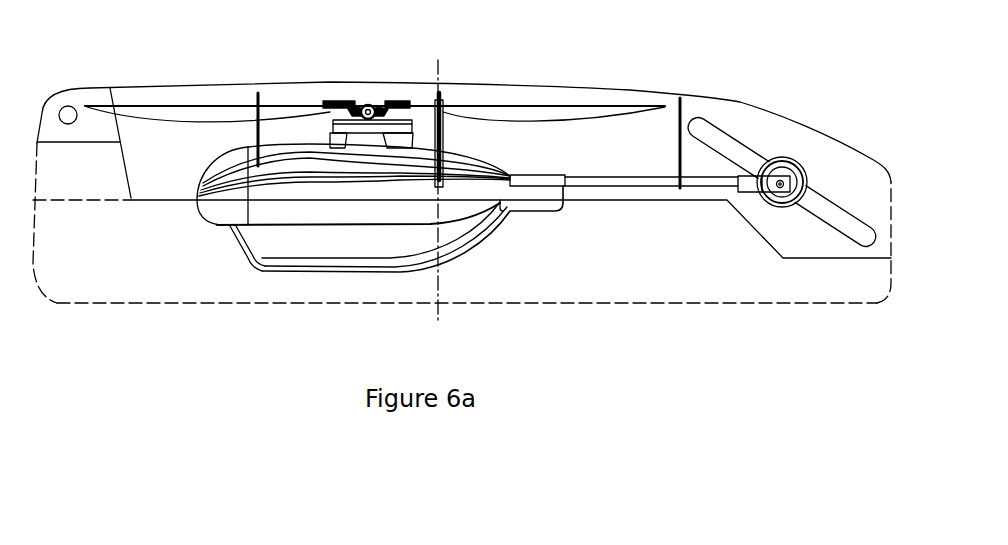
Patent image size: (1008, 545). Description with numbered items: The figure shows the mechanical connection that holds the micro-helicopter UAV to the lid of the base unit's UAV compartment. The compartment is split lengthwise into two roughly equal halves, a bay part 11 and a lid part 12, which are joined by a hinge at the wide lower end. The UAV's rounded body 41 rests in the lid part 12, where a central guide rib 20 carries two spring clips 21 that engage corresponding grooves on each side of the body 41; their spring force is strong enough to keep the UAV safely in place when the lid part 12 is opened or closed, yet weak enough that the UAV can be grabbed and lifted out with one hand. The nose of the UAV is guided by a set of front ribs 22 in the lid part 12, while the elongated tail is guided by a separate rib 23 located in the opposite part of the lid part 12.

The bay part 11 is at (152, 258).
The lid part 12 is at (323, 82).
The central guide rib 20 is at (444, 132).
The spring clips 21 is at (445, 149).
The front ribs 22 is at (256, 128).
The rib 23 is at (678, 132).
The rounded body 41 is at (288, 243).